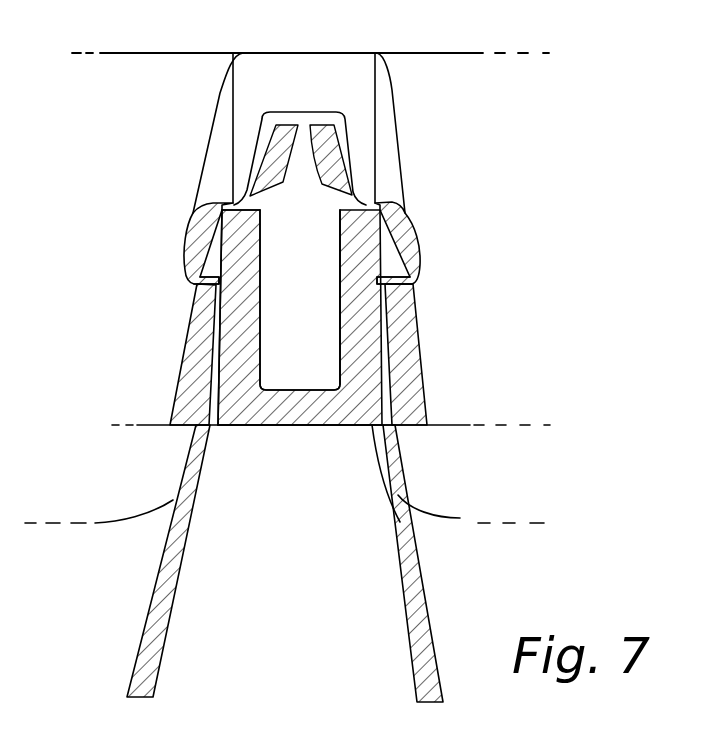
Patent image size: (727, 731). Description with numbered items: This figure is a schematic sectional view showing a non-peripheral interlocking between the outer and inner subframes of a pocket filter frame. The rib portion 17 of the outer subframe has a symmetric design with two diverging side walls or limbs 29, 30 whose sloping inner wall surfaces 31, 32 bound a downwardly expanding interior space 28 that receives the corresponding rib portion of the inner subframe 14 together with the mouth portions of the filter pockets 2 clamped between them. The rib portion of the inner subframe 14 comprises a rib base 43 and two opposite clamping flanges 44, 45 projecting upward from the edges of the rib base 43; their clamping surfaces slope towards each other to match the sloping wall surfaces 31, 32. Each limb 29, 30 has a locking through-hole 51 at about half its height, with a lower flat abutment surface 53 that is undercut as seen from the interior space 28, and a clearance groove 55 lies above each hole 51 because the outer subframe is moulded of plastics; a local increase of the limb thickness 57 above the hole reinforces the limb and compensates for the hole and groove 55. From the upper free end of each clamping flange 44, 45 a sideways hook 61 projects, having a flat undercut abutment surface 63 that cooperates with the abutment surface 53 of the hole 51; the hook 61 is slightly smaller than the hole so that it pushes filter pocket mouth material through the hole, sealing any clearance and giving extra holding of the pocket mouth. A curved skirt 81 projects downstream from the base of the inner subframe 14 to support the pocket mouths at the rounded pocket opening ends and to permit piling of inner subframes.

The filter pocket 2 is at (163, 583).
The inner subframe 14 is at (323, 428).
The rib portion 17 is at (384, 65).
The interior space 28 is at (318, 190).
The side wall or limb 29 is at (194, 327).
The side wall or limb 30 is at (408, 330).
The inner wall surface 31 is at (190, 383).
The inner wall surface 32 is at (402, 358).
The rib base 43 is at (270, 410).
The clamping flange 44 is at (238, 313).
The clamping flange 45 is at (352, 356).
The through-hole 51 is at (424, 240).
The abutment surface 53 is at (188, 291).
The clearance groove 55 is at (218, 168).
The cap inner wall 57 is at (253, 125).
The hook 61 is at (248, 229).
The undercut abutment surface 63 is at (236, 258).
The curved skirt 81 is at (392, 524).